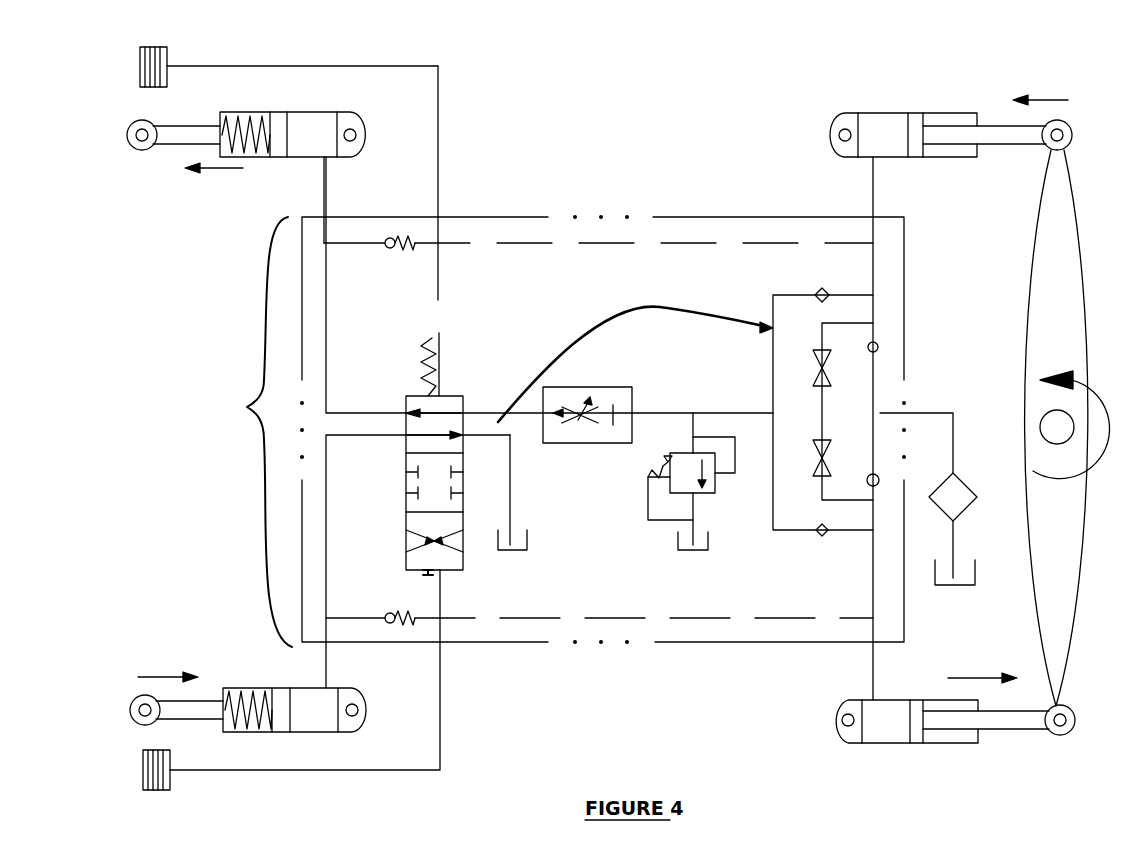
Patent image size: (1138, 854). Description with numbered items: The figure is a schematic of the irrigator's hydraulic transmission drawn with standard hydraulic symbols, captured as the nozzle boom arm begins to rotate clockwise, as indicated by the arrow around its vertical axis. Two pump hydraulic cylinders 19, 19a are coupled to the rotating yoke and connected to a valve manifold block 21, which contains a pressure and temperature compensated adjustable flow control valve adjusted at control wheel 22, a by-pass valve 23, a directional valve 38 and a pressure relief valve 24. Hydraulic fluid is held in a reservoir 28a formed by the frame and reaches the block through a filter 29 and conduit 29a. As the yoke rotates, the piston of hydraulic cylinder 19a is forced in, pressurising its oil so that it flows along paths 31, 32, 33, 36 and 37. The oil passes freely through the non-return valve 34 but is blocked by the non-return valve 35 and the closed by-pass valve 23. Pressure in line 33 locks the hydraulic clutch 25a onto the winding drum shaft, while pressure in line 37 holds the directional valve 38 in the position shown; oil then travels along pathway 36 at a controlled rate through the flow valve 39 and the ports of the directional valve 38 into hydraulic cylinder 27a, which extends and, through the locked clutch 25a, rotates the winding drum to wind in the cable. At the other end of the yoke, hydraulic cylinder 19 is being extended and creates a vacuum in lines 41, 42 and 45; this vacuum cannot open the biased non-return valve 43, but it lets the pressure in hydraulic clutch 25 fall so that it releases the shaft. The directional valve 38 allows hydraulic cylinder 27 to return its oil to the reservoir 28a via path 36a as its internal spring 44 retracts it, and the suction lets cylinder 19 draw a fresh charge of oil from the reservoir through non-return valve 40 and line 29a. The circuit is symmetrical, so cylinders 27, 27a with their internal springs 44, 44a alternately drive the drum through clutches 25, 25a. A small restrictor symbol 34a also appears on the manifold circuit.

The hydraulic cylinder 19 is at (900, 730).
The hydraulic cylinder 19a is at (912, 115).
The valve manifold block 21 is at (558, 431).
The control wheel 22 is at (581, 424).
The by-pass valve 23 is at (831, 470).
The pressure relief valve 24 is at (690, 480).
The hydraulic clutch 25 is at (160, 786).
The hydraulic clutch 25a is at (162, 53).
The hydraulic cylinder 27 is at (312, 715).
The hydraulic cylinder 27a is at (305, 123).
The reservoir 28a is at (512, 553).
The filter 29 is at (958, 505).
The conduit 29a is at (955, 460).
The path 31 is at (875, 272).
The path 32 is at (697, 240).
The line 33 is at (440, 188).
The non-return valve 34 is at (826, 291).
The restrictor 34a is at (820, 534).
The non-return valve 35 is at (879, 345).
The pathway 36 is at (328, 350).
The path 36a is at (328, 513).
The line 37 is at (440, 302).
The directional valve 38 is at (452, 402).
The flow valve 39 is at (568, 393).
The non-return valve 40 is at (879, 476).
The line 41 is at (542, 620).
The line 42 is at (443, 737).
The biased non-return valve 43 is at (389, 238).
The internal spring 44 is at (247, 697).
The internal spring 44a is at (245, 147).
The line 45 is at (870, 677).